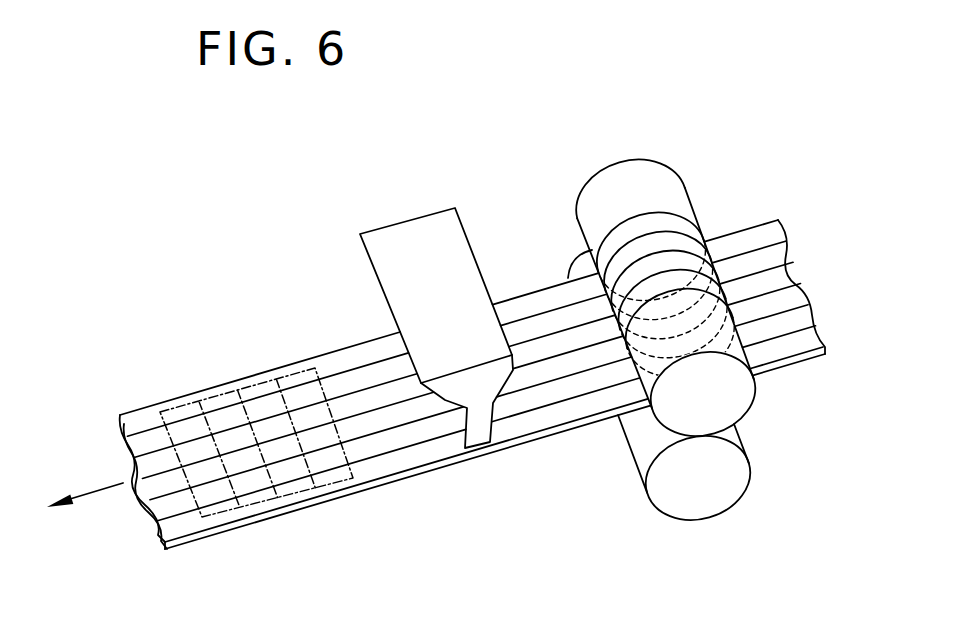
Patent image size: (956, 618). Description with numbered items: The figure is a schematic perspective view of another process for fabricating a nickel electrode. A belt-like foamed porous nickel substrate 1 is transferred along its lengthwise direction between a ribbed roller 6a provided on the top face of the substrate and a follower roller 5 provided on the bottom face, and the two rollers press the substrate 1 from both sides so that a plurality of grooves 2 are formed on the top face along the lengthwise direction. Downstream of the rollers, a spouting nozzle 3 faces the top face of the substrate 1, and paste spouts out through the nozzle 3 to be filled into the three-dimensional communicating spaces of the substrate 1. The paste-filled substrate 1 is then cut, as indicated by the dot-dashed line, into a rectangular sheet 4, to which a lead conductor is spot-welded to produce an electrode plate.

The foamed porous nickel substrate 1 is at (747, 243).
The grooves 2 is at (533, 410).
The spouting nozzle 3 is at (405, 238).
The cut rectangular sheet 4 is at (297, 467).
The follower roller 5 is at (725, 478).
The ribbed roller 6a is at (624, 178).